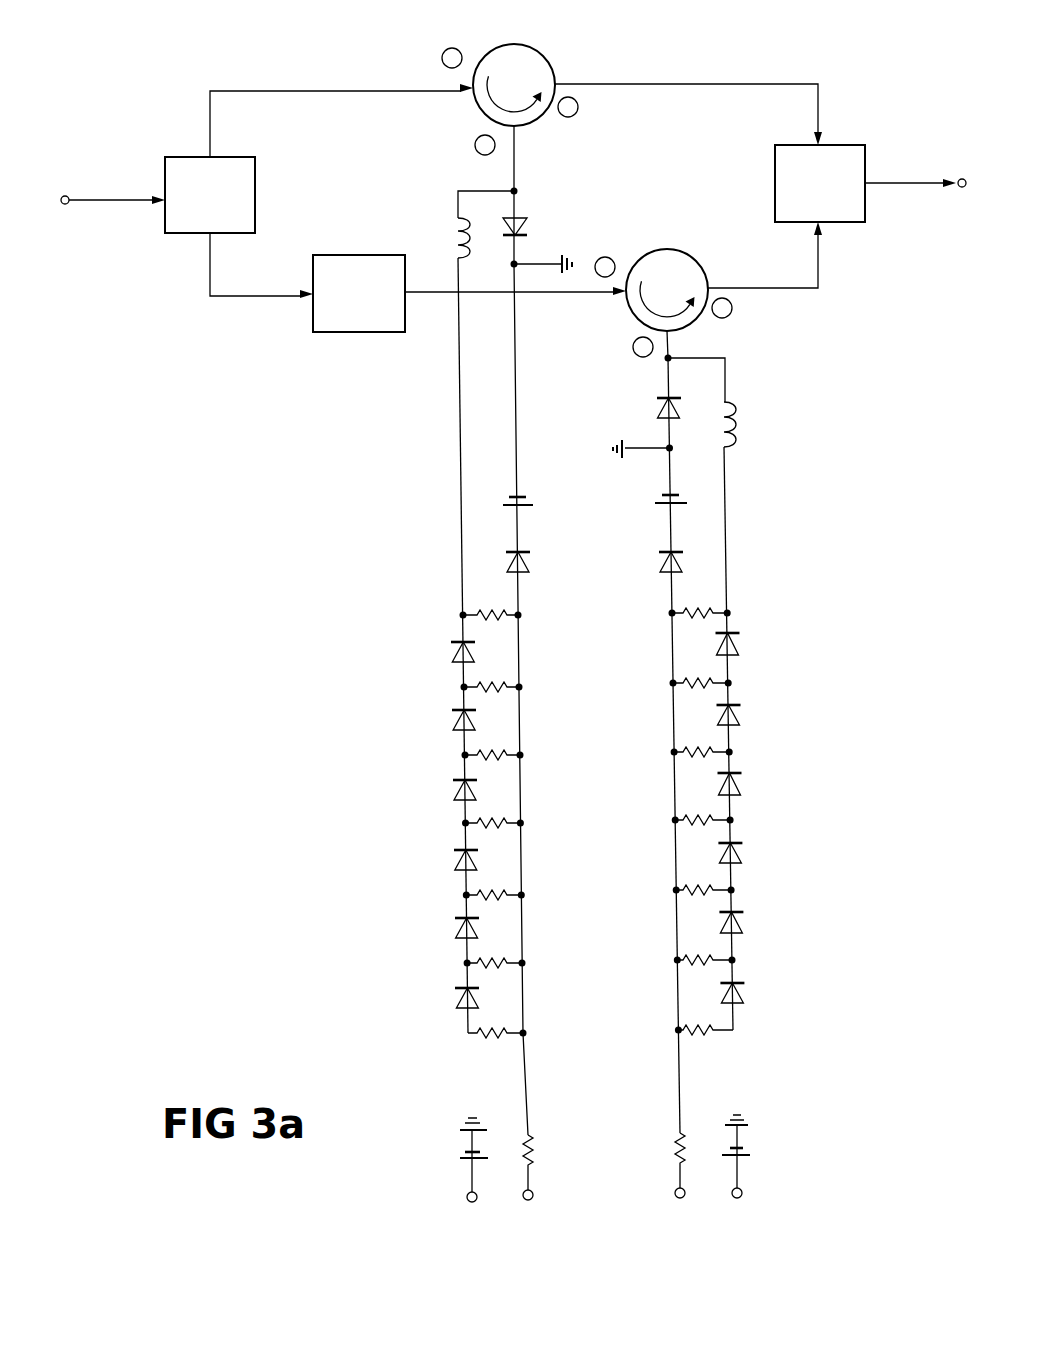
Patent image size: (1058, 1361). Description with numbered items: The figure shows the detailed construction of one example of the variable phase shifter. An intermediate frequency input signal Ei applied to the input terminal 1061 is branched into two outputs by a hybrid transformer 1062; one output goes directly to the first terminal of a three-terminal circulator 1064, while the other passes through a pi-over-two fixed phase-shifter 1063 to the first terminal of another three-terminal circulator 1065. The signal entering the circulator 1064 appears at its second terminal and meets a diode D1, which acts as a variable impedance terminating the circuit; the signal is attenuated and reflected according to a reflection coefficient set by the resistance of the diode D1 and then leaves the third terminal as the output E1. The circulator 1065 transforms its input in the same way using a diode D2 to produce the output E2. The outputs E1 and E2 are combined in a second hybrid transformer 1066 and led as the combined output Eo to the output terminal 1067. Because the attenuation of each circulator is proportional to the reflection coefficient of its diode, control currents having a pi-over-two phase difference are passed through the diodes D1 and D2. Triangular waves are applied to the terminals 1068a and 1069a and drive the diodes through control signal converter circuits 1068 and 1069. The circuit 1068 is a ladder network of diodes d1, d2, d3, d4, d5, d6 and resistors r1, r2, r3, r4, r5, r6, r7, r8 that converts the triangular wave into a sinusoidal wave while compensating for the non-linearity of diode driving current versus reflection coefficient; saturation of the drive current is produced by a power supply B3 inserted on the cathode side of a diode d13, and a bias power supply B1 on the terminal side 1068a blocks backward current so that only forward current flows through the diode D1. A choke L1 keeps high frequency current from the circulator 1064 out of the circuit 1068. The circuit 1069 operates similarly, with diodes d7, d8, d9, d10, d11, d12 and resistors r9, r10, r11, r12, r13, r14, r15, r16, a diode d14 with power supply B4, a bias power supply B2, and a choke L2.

The input terminal 1061 is at (66, 196).
The hybrid transformer 1062 is at (165, 215).
The π/2 fixed phase-shifter 1063 is at (365, 255).
The 3-terminal circulator 1064 is at (540, 53).
The 3-terminal circulator 1065 is at (644, 249).
The hybrid transformer 1066 is at (826, 145).
The output terminal 1067 is at (963, 179).
The control signal converter circuit 1068 is at (420, 1217).
The terminal 1068a is at (540, 1212).
The control signal converter circuit 1069 is at (798, 1222).
The terminal 1069a is at (748, 1212).
The input signal Ei is at (128, 197).
The combined output Eo is at (902, 181).
The output of circulator 1064 E1 is at (705, 82).
The output of circulator 1065 E2 is at (782, 286).
The diode D1 is at (521, 218).
The diode D2 is at (657, 409).
The choke L1 is at (456, 230).
The choke L2 is at (731, 423).
The bias power supply B1 is at (465, 1152).
The bias power supply B2 is at (745, 1148).
The power supply B3 is at (521, 497).
The power supply B4 is at (673, 496).
The diode d1 is at (456, 653).
The diode d2 is at (457, 722).
The diode d3 is at (458, 792).
The diode d4 is at (459, 861).
The diode d5 is at (460, 929).
The diode d6 is at (460, 999).
The diode d7 is at (740, 650).
The diode d8 is at (741, 720).
The diode d9 is at (741, 789).
The diode d10 is at (742, 856).
The diode d11 is at (743, 926).
The diode d12 is at (744, 996).
The diode d13 is at (523, 552).
The diode d14 is at (665, 550).
The resistor r1 is at (500, 611).
The resistor r2 is at (501, 683).
The resistor r3 is at (503, 751).
The resistor r4 is at (503, 819).
The resistor r5 is at (506, 891).
The resistor r6 is at (506, 959).
The resistor r7 is at (508, 1029).
The resistor r8 is at (535, 1153).
The resistor r9 is at (708, 604).
The resistor r10 is at (689, 658).
The resistor r11 is at (689, 727).
The resistor r12 is at (689, 795).
The resistor r13 is at (692, 866).
The resistor r14 is at (692, 936).
The resistor r15 is at (694, 1006).
The resistor r16 is at (674, 1152).